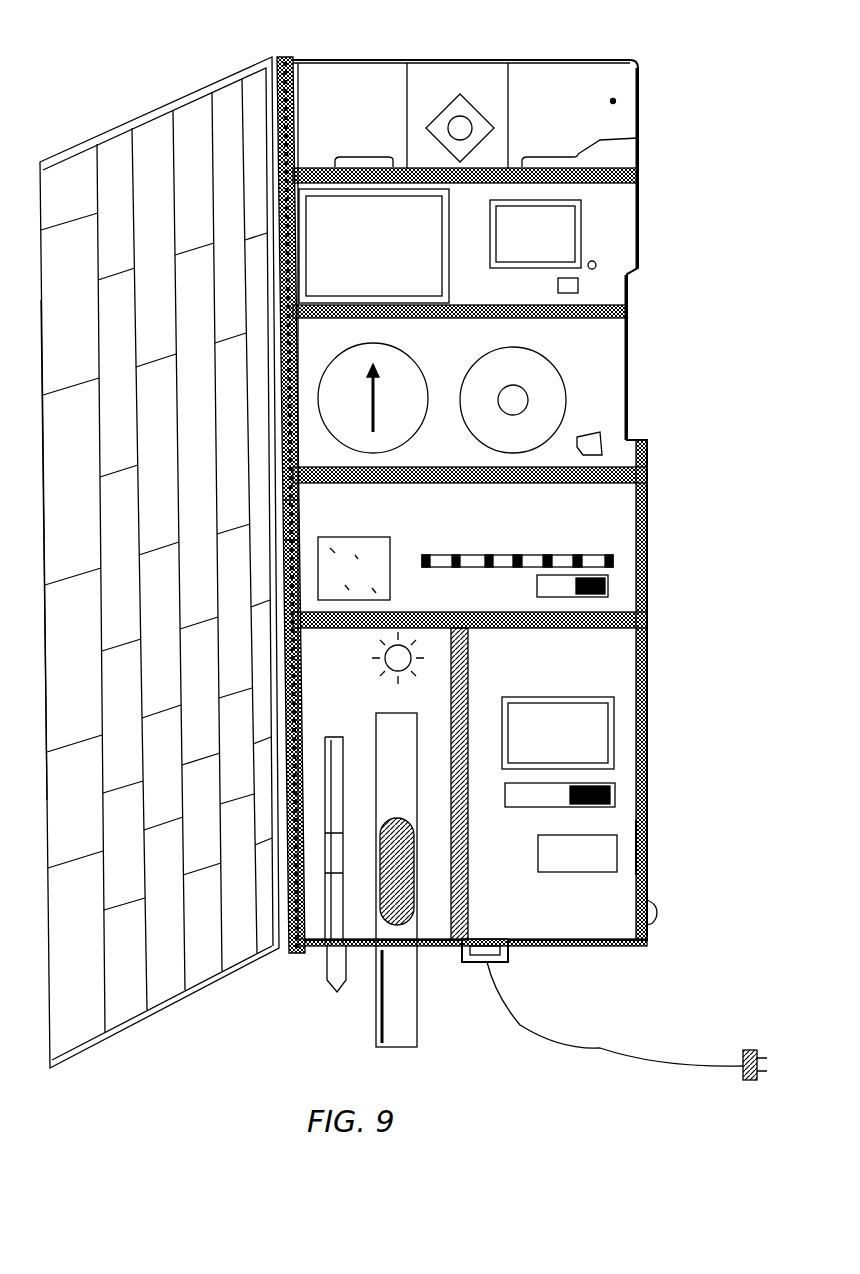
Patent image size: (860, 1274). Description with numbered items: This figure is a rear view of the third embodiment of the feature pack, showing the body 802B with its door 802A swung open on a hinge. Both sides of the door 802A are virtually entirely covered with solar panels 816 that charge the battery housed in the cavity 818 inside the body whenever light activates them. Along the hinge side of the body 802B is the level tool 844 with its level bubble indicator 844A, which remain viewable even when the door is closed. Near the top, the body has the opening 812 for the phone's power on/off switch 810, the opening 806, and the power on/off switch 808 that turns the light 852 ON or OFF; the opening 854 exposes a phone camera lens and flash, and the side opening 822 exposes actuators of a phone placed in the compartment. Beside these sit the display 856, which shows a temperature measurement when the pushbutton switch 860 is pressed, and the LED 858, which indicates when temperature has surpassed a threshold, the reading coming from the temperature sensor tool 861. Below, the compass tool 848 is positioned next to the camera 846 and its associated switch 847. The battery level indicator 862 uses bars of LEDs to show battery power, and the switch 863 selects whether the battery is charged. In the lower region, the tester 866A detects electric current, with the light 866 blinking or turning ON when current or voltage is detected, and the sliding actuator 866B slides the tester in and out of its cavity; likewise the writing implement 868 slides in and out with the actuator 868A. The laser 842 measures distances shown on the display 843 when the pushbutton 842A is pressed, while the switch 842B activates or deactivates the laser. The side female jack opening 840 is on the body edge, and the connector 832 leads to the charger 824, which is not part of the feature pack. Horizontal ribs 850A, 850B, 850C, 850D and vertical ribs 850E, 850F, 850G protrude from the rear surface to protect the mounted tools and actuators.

The door 802A is at (152, 110).
The body 802B is at (432, 57).
The opening 806 is at (612, 102).
The power on/off switch 808 is at (638, 140).
The power on/off switch 810 is at (352, 157).
The opening 812 is at (378, 77).
The solar panels 816 is at (72, 1037).
The cavity 818 is at (60, 709).
The side opening 822 is at (627, 350).
The charger 824 is at (744, 1050).
The connector 832 is at (508, 962).
The side female jack opening 840 is at (658, 908).
The laser 842 is at (652, 845).
The pushbutton 842A is at (605, 836).
The switch 842B is at (612, 790).
The display 843 is at (536, 697).
The level tool 844 is at (285, 59).
The level bubble indicator 844A is at (285, 518).
The camera 846 is at (568, 400).
The switch 847 is at (600, 433).
The compass tool 848 is at (413, 360).
The horizontal rib 850A is at (638, 176).
The horizontal rib 850B is at (627, 313).
The horizontal rib 850C is at (647, 478).
The horizontal rib 850D is at (647, 620).
The vertical rib 850E is at (648, 708).
The vertical rib 850F is at (470, 895).
The vertical rib 850G is at (291, 62).
The light 852 is at (470, 112).
The opening 854 is at (415, 268).
The display 856 is at (581, 236).
The LED 858 is at (596, 263).
The pushbutton switch 860 is at (578, 285).
The temperature sensor tool 861 is at (390, 590).
The battery level indicator 862 is at (427, 556).
The switch 863 is at (535, 587).
The LED or light 866 is at (387, 667).
The tester 866A is at (403, 1050).
The sliding actuator 866B is at (412, 882).
The writing implement 868 is at (337, 988).
The actuator 868A is at (340, 837).